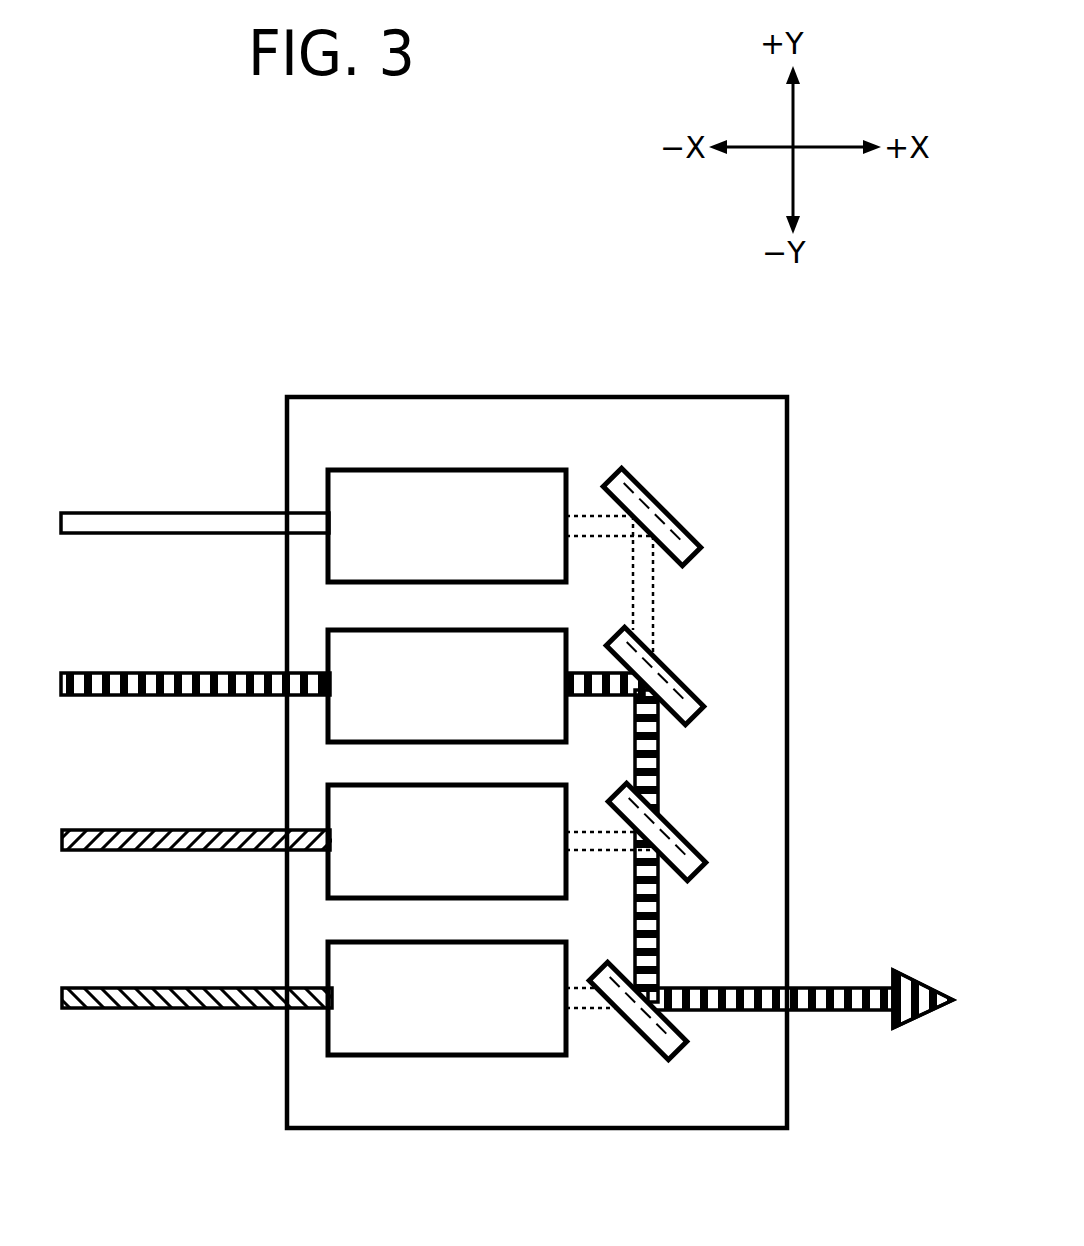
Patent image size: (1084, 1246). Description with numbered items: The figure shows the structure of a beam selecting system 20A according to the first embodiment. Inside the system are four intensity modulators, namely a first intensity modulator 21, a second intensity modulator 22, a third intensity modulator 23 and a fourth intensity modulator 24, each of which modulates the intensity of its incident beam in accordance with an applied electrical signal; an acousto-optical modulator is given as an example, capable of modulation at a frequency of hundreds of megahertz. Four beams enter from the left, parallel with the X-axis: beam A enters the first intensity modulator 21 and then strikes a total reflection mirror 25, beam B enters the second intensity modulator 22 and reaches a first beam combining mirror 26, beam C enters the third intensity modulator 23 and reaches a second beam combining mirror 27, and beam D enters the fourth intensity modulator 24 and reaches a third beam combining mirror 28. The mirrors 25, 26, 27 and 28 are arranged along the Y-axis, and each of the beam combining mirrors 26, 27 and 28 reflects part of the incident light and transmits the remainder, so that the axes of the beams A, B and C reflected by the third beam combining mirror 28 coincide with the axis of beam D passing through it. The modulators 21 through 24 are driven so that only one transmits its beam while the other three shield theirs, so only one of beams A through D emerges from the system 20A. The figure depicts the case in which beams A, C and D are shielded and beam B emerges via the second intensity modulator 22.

The beam selecting system 20A is at (505, 300).
The first intensity modulator 21 is at (441, 488).
The second intensity modulator 22 is at (442, 646).
The third intensity modulator 23 is at (446, 801).
The fourth intensity modulator 24 is at (447, 959).
The total reflection mirror 25 is at (667, 529).
The first beam combining mirror 26 is at (668, 684).
The second beam combining mirror 27 is at (676, 840).
The third beam combining mirror 28 is at (651, 1025).
The beam A is at (133, 513).
The beam B is at (135, 673).
The beam C is at (137, 830).
The beam D is at (146, 988).